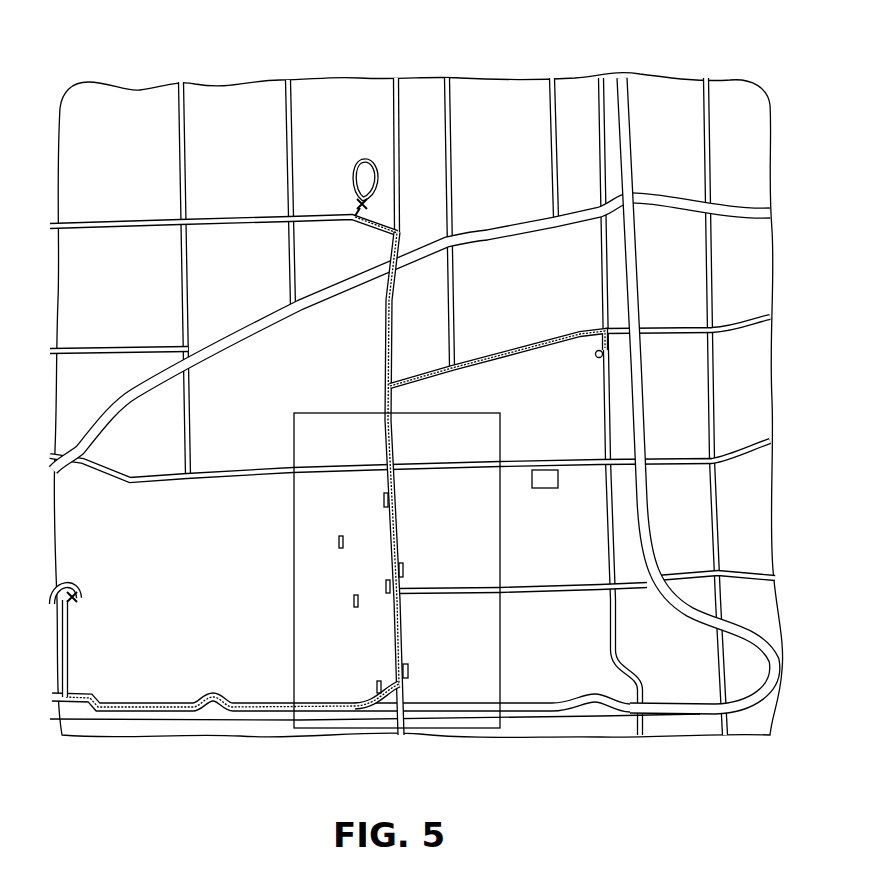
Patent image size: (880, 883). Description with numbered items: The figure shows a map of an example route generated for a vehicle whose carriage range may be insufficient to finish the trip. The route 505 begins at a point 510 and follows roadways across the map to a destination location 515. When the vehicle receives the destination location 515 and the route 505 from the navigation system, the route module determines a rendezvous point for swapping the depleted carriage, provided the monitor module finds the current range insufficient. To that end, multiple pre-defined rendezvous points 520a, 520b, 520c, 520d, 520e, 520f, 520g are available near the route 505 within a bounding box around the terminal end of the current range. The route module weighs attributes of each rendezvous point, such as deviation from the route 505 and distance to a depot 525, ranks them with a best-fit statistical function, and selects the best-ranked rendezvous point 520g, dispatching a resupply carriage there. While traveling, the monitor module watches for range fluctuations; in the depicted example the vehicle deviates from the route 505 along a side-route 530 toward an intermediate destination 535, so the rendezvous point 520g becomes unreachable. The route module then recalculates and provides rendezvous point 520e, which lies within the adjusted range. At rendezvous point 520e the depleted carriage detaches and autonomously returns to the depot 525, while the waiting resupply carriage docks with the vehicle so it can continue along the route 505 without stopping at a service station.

The point 510 is at (263, 75).
The route 505 is at (386, 346).
The destination location 515 is at (80, 597).
The pre-defined rendezvous point 520a is at (383, 501).
The pre-defined rendezvous point 520b is at (338, 541).
The pre-defined rendezvous point 520c is at (404, 570).
The pre-defined rendezvous point 520d is at (389, 596).
The pre-defined rendezvous point 520e is at (354, 602).
The pre-defined rendezvous point 520f is at (410, 673).
The pre-defined rendezvous point 520g is at (375, 690).
The depot 525 is at (548, 489).
The side-route 530 is at (512, 347).
The intermediate destination 535 is at (597, 358).